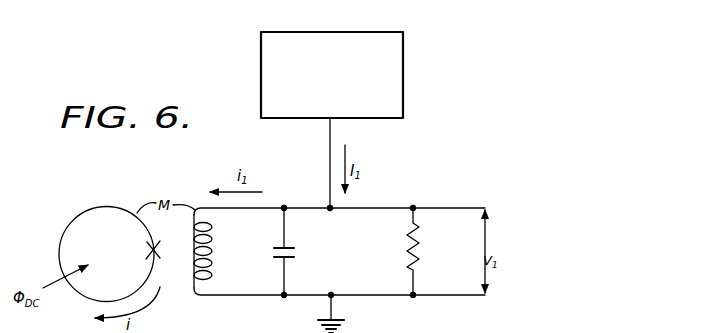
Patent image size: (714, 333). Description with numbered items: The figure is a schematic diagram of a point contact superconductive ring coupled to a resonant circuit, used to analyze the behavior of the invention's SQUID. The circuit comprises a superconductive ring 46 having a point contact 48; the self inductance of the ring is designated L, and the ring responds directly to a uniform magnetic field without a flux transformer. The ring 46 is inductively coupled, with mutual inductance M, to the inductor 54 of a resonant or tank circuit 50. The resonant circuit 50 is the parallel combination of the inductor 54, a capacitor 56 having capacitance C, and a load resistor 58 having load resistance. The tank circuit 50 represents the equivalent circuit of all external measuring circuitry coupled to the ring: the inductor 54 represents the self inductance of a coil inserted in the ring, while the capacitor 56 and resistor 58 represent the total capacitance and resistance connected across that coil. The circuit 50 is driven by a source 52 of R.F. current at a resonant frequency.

The superconductive ring 46 is at (92, 206).
The point contact 48 is at (143, 247).
The resonant circuit 50 is at (271, 326).
The source of R.F. current 52 is at (403, 73).
The inductor 54 is at (210, 223).
The capacitor 56 is at (292, 245).
The load resistor 58 is at (425, 242).